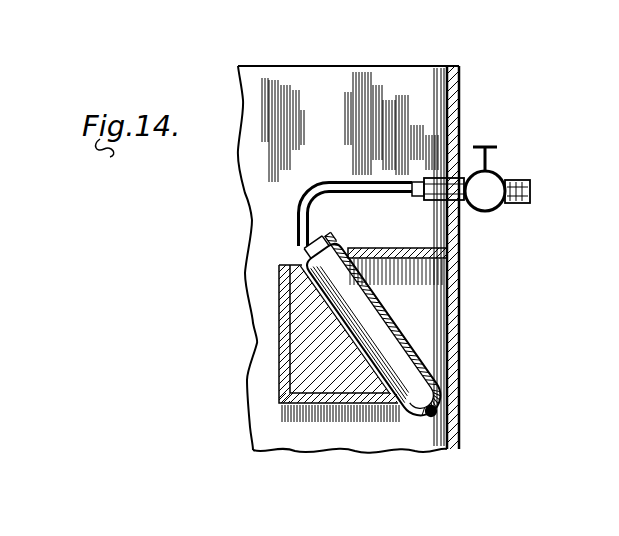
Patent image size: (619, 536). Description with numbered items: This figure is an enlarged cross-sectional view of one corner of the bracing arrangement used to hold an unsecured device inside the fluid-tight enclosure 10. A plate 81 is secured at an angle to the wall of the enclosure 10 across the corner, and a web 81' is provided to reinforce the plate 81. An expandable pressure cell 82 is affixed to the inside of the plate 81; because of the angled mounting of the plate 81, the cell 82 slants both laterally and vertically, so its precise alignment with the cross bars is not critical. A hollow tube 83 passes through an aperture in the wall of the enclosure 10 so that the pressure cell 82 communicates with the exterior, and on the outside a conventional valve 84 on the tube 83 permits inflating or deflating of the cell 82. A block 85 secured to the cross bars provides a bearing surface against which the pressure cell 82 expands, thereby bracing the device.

The enclosure 10 is at (323, 78).
The plate 81 is at (419, 327).
The web 81' is at (445, 241).
The pressure cell 82 is at (407, 405).
The hollow tube 83 is at (292, 200).
The valve 84 is at (500, 173).
The block 85 is at (300, 388).